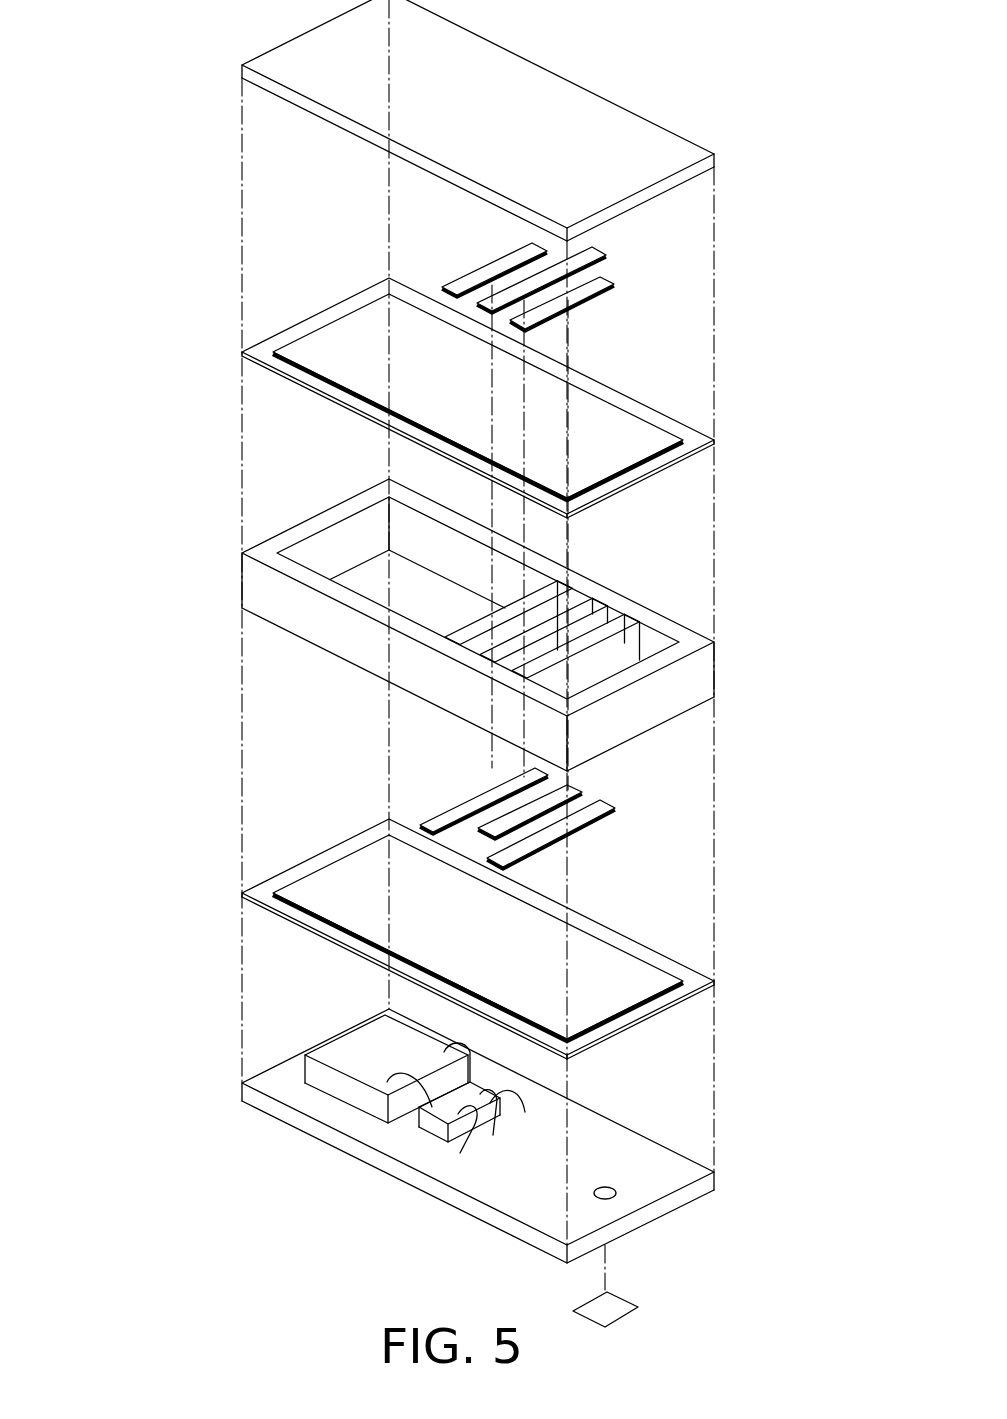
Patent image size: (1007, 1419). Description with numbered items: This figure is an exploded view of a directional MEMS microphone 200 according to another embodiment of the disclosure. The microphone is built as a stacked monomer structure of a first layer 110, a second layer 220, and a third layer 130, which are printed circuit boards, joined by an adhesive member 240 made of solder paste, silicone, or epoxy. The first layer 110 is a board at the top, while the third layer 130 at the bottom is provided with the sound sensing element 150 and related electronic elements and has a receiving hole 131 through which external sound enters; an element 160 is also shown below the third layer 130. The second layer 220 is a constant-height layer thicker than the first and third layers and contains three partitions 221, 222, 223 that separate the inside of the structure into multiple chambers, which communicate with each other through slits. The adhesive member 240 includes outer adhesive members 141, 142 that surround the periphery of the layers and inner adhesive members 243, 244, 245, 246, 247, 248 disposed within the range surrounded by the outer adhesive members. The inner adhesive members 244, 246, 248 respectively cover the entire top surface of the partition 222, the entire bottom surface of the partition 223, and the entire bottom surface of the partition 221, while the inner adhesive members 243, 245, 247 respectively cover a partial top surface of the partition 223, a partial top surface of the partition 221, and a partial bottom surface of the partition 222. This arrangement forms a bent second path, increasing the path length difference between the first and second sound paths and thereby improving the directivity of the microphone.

The directional MEMS microphone 200 is at (882, 57).
The first layer 110 is at (577, 102).
The adhesive member 240 is at (91, 283).
The outer adhesive member 141 is at (672, 427).
The outer adhesive member 142 is at (677, 976).
The inner adhesive member 243 is at (505, 258).
The inner adhesive member 244 is at (592, 262).
The inner adhesive member 245 is at (588, 290).
The inner adhesive member 246 is at (477, 802).
The inner adhesive member 247 is at (573, 793).
The inner adhesive member 248 is at (592, 815).
The second layer 220 is at (428, 625).
The partition 221 is at (613, 633).
The partition 222 is at (582, 610).
The partition 223 is at (535, 598).
The third layer 130 is at (449, 1122).
The receiving hole 131 is at (607, 1192).
The sound sensing element 150 is at (363, 1037).
The pad 160 is at (628, 1313).